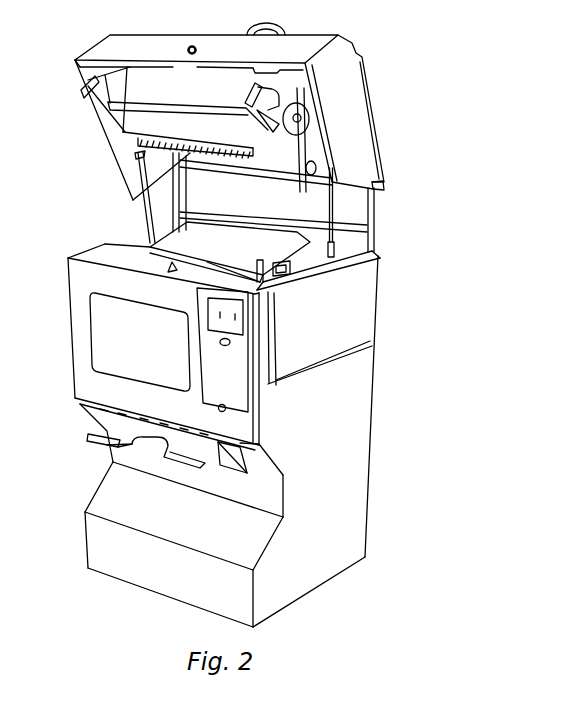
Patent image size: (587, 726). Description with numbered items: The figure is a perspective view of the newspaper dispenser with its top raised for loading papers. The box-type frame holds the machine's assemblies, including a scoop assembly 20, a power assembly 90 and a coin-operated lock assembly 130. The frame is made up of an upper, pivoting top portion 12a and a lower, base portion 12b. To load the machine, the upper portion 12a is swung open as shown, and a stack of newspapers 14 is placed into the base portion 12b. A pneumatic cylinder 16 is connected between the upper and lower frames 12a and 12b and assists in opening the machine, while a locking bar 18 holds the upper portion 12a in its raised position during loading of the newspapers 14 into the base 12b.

The scoop assembly 20 is at (66, 112).
The upper, pivoting top portion 12a is at (358, 121).
The lower, base portion 12b is at (357, 430).
The stack of newspapers 14 is at (188, 242).
The pneumatic cylinder 16 is at (335, 255).
The locking bar 18 is at (180, 237).
The power assembly 90 is at (326, 95).
The coin-operated lock assembly 130 is at (297, 303).